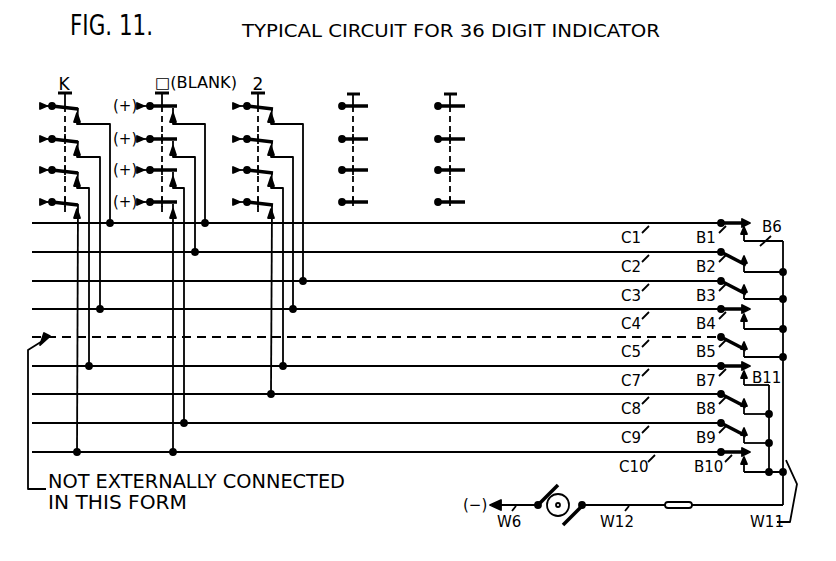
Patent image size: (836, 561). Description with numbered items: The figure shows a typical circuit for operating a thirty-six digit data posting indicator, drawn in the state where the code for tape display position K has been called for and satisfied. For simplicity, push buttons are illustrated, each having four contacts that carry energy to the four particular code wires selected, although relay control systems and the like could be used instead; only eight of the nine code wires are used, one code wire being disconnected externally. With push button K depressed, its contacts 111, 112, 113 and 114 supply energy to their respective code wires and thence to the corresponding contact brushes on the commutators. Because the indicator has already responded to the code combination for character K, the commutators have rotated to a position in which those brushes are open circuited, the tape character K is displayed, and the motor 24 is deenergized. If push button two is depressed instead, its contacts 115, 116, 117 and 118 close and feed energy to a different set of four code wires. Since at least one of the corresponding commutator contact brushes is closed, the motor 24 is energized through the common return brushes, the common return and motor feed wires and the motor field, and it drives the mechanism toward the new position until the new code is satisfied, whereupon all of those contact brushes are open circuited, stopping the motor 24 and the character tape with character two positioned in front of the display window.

The contact 111 is at (77, 109).
The contact 112 is at (80, 138).
The contact 113 is at (68, 173).
The contact 114 is at (72, 204).
The contact 115 is at (272, 108).
The contact 116 is at (276, 138).
The contact 117 is at (260, 173).
The contact 118 is at (266, 204).
The motor 24 is at (569, 497).